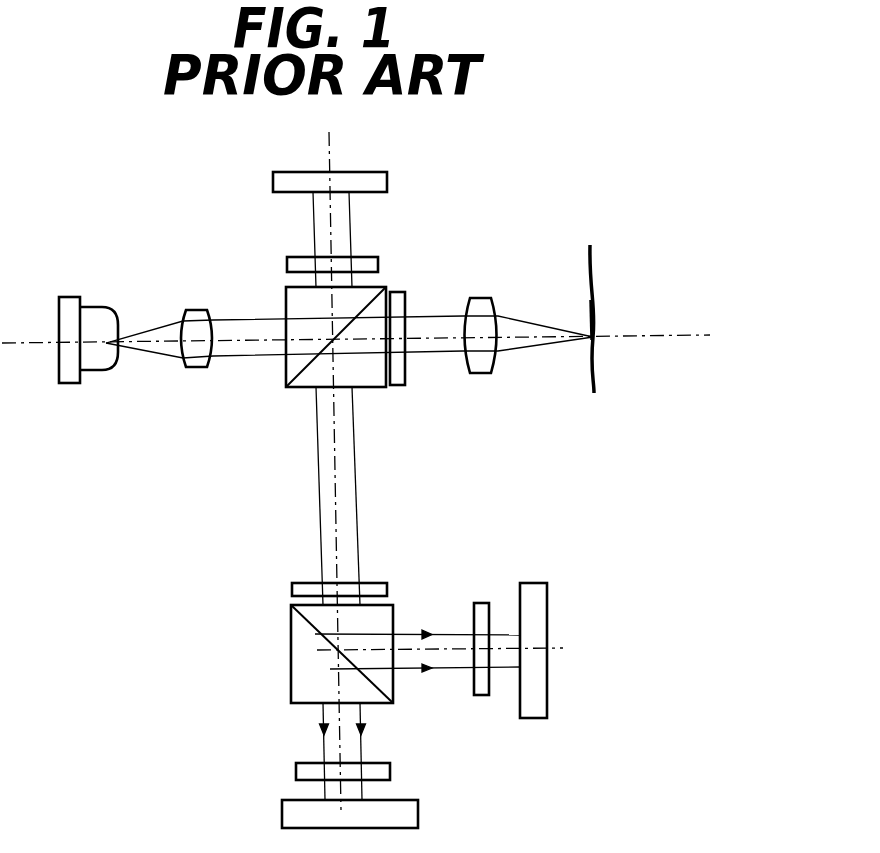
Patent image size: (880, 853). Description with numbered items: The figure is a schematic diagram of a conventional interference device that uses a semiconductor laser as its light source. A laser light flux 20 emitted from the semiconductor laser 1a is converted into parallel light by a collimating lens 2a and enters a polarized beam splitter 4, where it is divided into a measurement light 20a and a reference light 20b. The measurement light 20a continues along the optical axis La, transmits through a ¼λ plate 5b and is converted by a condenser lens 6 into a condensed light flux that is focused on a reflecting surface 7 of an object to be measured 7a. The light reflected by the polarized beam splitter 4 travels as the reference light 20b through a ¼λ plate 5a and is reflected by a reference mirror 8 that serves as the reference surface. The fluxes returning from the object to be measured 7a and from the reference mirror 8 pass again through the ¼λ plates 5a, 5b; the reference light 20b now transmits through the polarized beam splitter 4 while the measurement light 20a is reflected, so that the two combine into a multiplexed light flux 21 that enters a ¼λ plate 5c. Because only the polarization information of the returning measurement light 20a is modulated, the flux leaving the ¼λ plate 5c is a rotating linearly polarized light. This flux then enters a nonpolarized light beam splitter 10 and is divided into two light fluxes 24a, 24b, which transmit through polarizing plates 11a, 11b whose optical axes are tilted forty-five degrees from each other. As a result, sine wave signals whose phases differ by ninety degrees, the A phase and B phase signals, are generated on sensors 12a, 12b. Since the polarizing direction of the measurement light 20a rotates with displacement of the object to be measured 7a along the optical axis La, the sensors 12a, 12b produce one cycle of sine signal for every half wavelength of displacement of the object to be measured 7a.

The semiconductor laser 1a is at (72, 297).
The collimating lens 2a is at (196, 310).
The polarized beam splitter 4 is at (286, 297).
The ¼λ plate 5a is at (379, 263).
The ¼λ plate 5b is at (397, 386).
The ¼λ plate 5c is at (292, 590).
The condenser lens 6 is at (480, 298).
The reflecting surface 7 is at (588, 280).
The object to be measured 7a is at (594, 258).
The reference mirror 8 is at (358, 172).
The nonpolarized light beam splitter 10 is at (291, 650).
The polarizing plate 11a is at (300, 770).
The polarizing plate 11b is at (481, 696).
The sensor 12a is at (290, 812).
The sensor 12b is at (533, 583).
The laser light flux 20 is at (152, 357).
The measurement light 20a is at (435, 353).
The reference light 20b is at (313, 226).
The multiplexed light flux 21 is at (318, 465).
The light flux 24a is at (362, 752).
The light flux 24b is at (452, 635).
The optical axis La is at (661, 340).